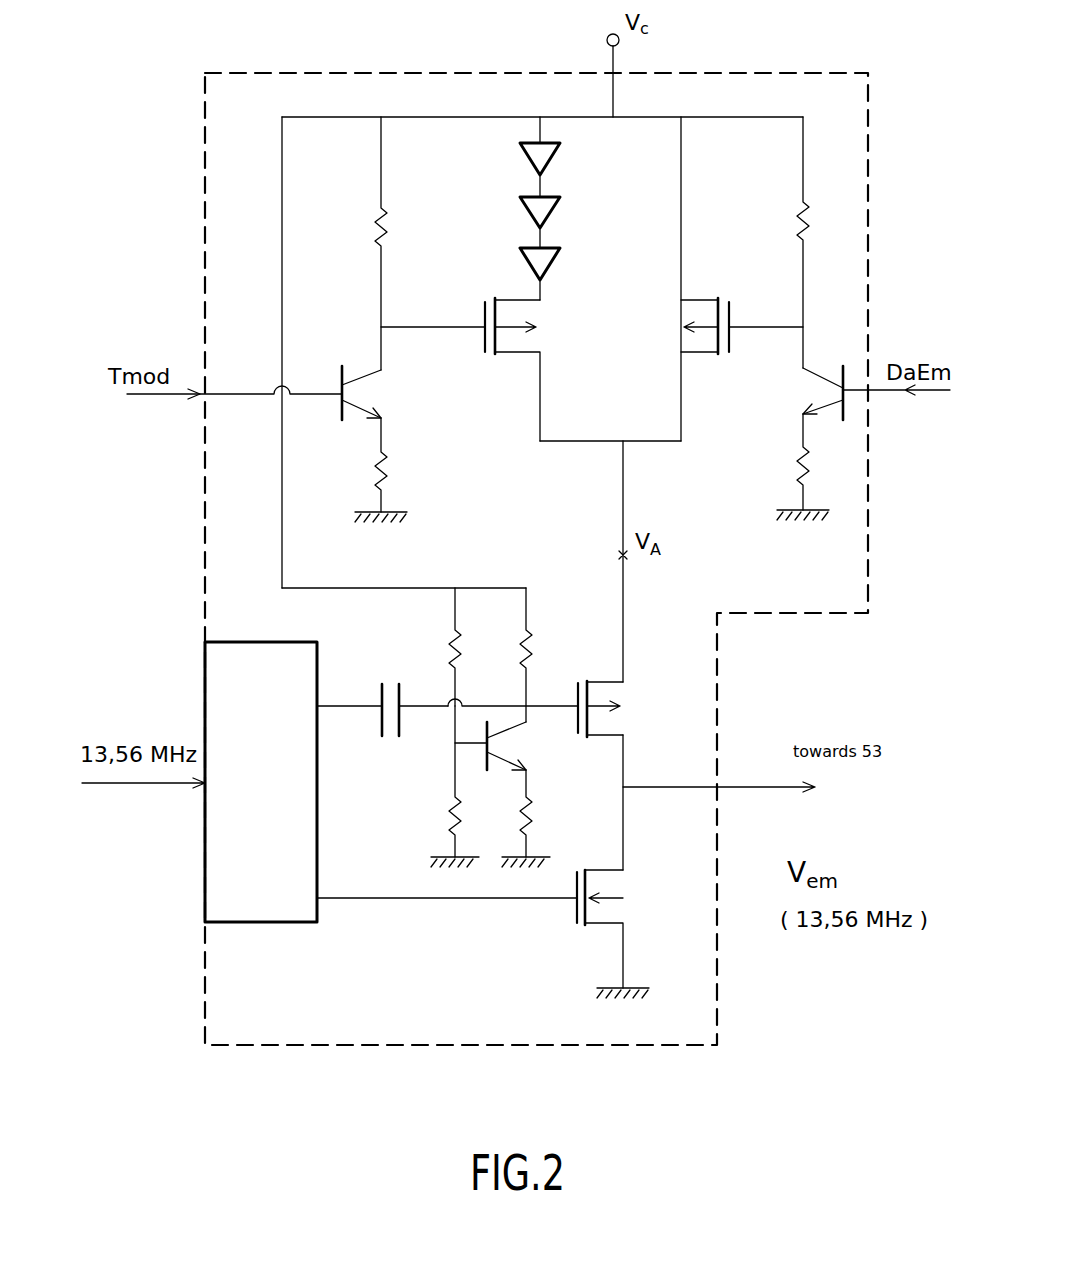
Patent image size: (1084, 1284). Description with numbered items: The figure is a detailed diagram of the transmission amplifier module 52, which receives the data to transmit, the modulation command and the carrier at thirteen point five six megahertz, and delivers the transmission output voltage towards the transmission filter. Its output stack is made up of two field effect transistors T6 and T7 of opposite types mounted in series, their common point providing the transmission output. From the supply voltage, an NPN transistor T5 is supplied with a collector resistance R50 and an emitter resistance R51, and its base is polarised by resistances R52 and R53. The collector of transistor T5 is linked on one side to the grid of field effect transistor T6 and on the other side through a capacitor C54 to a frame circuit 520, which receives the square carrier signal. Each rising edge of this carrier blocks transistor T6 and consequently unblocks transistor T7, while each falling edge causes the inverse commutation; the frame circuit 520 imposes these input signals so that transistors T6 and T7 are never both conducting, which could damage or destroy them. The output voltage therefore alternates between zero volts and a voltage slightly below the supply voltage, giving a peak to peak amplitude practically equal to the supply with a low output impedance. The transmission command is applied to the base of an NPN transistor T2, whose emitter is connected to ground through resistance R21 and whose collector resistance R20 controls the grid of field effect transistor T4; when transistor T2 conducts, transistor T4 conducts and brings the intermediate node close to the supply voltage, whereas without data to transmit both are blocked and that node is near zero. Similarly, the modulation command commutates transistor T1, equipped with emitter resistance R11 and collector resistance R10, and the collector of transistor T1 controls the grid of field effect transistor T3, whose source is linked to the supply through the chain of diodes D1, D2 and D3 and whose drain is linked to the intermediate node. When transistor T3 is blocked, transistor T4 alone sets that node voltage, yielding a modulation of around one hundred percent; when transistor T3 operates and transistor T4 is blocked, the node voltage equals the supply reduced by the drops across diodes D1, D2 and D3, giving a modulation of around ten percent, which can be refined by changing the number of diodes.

The transmission amplifier module 52 is at (322, 73).
The frame circuit 520 is at (270, 642).
The collector resistance R10 is at (408, 243).
The emitter resistance R11 is at (396, 470).
The collector resistance R20 is at (782, 242).
The emitter resistance R21 is at (792, 467).
The collector resistance R50 is at (551, 655).
The emitter resistance R51 is at (542, 818).
The base polarisation resistance R52 is at (432, 647).
The base polarisation resistance R53 is at (441, 786).
The capacitor C54 is at (382, 727).
The diode D1 is at (562, 146).
The diode D2 is at (562, 201).
The diode D3 is at (562, 264).
The transistor T1 is at (378, 393).
The NPN type transistor T2 is at (805, 393).
The field effect transistor T3 is at (479, 369).
The field effect transistor T4 is at (723, 326).
The NPN type transistor T5 is at (504, 746).
The field effect transistor T6 is at (620, 709).
The field effect transistor T7 is at (489, 934).